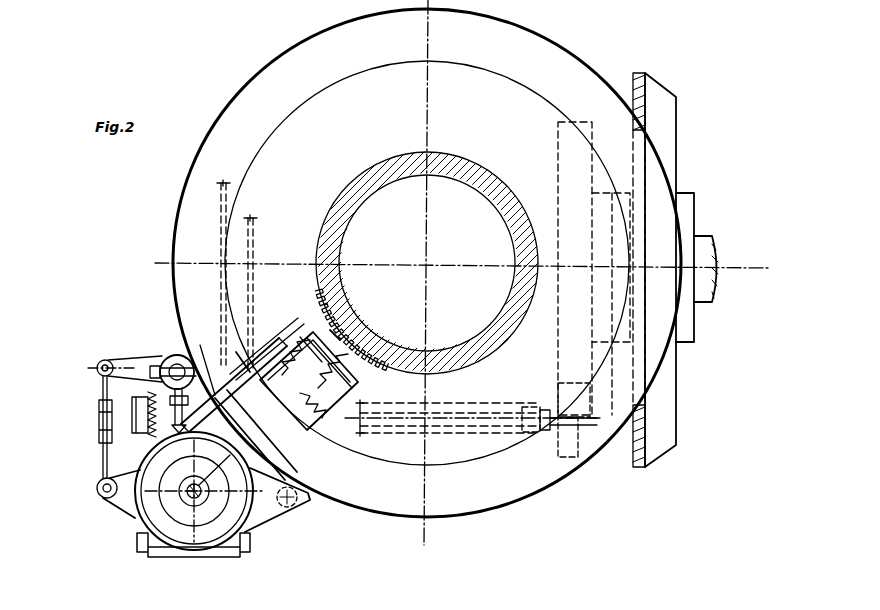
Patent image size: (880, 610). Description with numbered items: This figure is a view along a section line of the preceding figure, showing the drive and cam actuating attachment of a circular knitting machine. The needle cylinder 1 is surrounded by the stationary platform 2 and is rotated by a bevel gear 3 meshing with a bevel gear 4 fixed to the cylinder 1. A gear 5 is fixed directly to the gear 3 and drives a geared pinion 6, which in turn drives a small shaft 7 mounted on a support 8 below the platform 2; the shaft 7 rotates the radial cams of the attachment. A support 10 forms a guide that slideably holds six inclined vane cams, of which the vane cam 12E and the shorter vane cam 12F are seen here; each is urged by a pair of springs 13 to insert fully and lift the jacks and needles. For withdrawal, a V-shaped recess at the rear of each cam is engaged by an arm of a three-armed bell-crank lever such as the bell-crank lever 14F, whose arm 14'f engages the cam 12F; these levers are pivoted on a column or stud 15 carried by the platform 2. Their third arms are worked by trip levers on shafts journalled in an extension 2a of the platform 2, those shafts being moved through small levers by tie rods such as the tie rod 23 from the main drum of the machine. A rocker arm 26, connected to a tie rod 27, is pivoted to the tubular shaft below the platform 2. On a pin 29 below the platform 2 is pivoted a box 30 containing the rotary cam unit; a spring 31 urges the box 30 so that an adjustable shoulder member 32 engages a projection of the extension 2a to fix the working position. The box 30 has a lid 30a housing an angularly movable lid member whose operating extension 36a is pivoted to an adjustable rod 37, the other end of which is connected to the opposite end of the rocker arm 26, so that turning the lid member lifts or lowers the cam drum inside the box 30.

The needle cylinder 1 is at (468, 180).
The stationary platform 2 is at (540, 46).
The extension of the platform 2a is at (180, 352).
The bevel gear 3 is at (638, 76).
The bevel gear 4 is at (309, 381).
The gear 5 is at (557, 156).
The geared pinion 6 is at (570, 458).
The small shaft 7 is at (478, 427).
The support 8 is at (400, 433).
The support 10 is at (365, 378).
The vane cam 12E is at (418, 272).
The vane cam 12F is at (340, 340).
The springs 13 is at (300, 337).
The bell-crank lever 14F is at (277, 464).
The arm of the bell-crank lever 14'f is at (267, 349).
The column or stud 15 is at (244, 360).
The tie rod 23 is at (262, 220).
The rocker arm 26 is at (153, 356).
The tie rod 27 is at (218, 193).
The pin 29 is at (295, 510).
The box 30 is at (265, 512).
The lid of the box 30a is at (250, 528).
The spring 31 is at (150, 435).
The adjustable shoulder member 32 is at (170, 400).
The operating extension 36a is at (110, 500).
The adjustable rod 37 is at (108, 456).